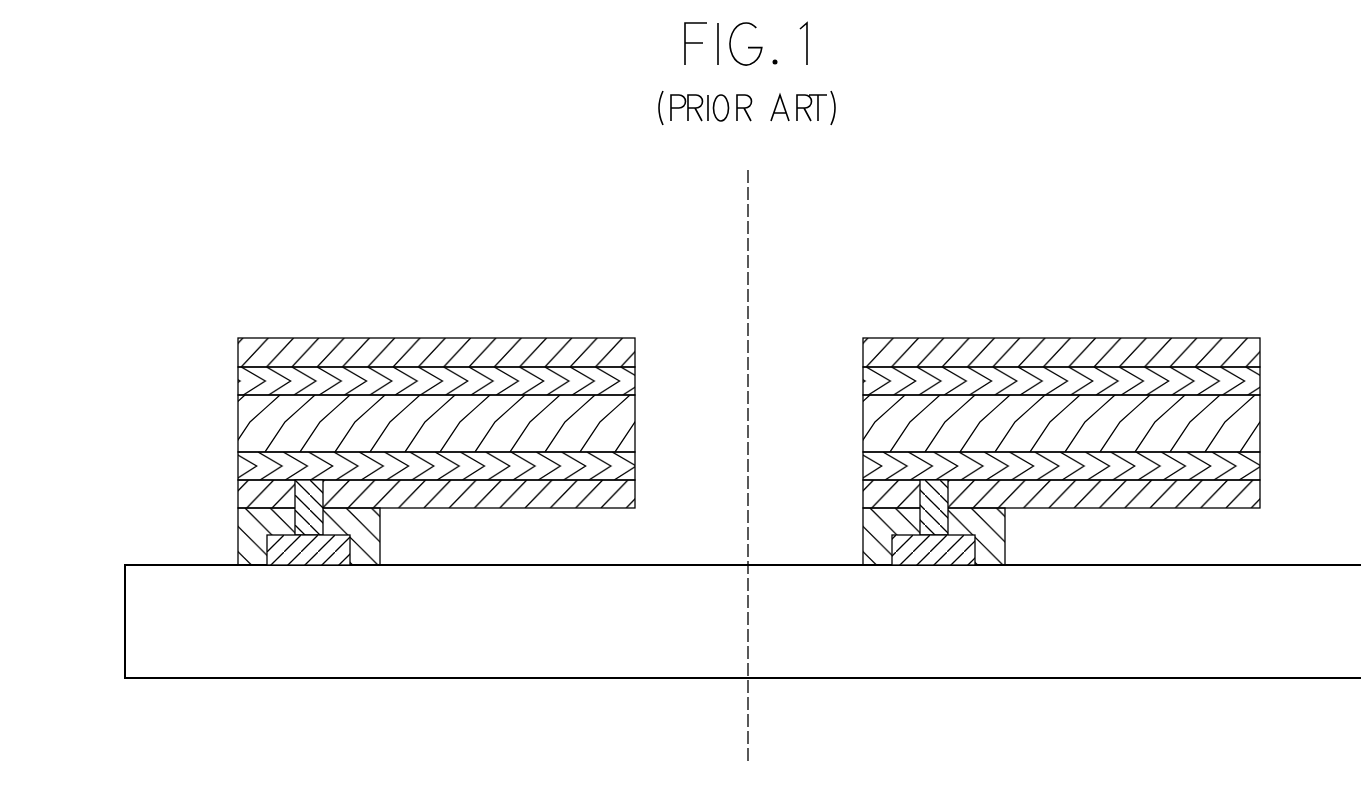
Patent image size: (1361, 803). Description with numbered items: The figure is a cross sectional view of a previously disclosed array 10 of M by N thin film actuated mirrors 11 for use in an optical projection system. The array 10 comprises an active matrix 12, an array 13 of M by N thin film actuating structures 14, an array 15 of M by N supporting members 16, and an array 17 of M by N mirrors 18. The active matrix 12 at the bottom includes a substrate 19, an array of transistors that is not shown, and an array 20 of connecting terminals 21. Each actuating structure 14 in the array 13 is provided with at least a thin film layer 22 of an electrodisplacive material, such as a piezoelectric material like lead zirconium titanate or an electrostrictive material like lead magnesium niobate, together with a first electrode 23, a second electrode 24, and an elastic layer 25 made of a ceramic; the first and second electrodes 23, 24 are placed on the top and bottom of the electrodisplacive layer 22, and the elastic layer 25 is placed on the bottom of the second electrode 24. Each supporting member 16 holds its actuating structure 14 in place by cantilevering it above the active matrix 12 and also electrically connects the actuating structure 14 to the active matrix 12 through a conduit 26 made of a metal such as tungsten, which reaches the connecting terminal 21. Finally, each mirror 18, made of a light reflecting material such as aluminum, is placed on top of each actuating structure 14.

The array of M×N thin film actuated mirrors 10 is at (1052, 205).
The thin film actuated mirror 11 is at (238, 295).
The active matrix 12 is at (100, 540).
The array of M×N thin film actuating structures 13 is at (184, 372).
The thin film actuating structure 14 is at (468, 407).
The array of M×N supporting members 15 is at (149, 482).
The supporting member 16 is at (360, 525).
The array of M×N mirrors 17 is at (187, 339).
The mirror 18 is at (434, 338).
The substrate 19 is at (580, 648).
The array of M×N connecting terminals 20 is at (221, 540).
The connecting terminal 21 is at (305, 548).
The thin film layer of electrodisplacive material 22 is at (353, 416).
The first electrode 23 is at (620, 381).
The second electrode 24 is at (624, 457).
The elastic layer 25 is at (547, 498).
The conduit 26 is at (303, 501).